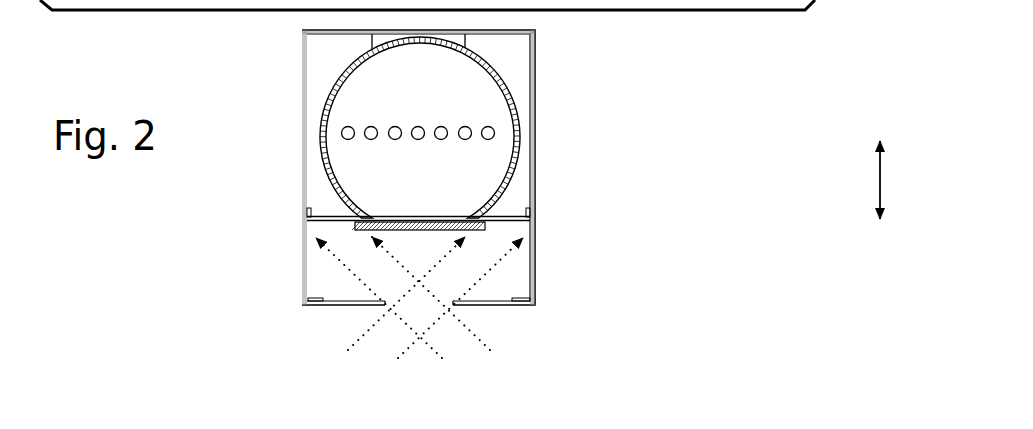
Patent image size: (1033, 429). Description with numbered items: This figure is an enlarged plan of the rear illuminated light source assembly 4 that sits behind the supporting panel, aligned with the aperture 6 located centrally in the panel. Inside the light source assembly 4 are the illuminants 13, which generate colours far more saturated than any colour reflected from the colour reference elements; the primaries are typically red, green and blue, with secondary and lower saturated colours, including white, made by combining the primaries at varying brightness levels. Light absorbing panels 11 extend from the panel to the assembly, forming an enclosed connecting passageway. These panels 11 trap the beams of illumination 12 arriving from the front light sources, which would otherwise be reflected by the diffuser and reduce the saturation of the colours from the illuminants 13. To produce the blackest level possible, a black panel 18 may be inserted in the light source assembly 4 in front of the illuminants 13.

The rear illuminated light source assembly 4 is at (545, 152).
The illuminants 13 is at (352, 122).
The black panel 18 is at (310, 239).
The light absorbing panels 11 is at (347, 296).
The beams of illumination 12 is at (342, 352).
The aperture 6 is at (420, 311).